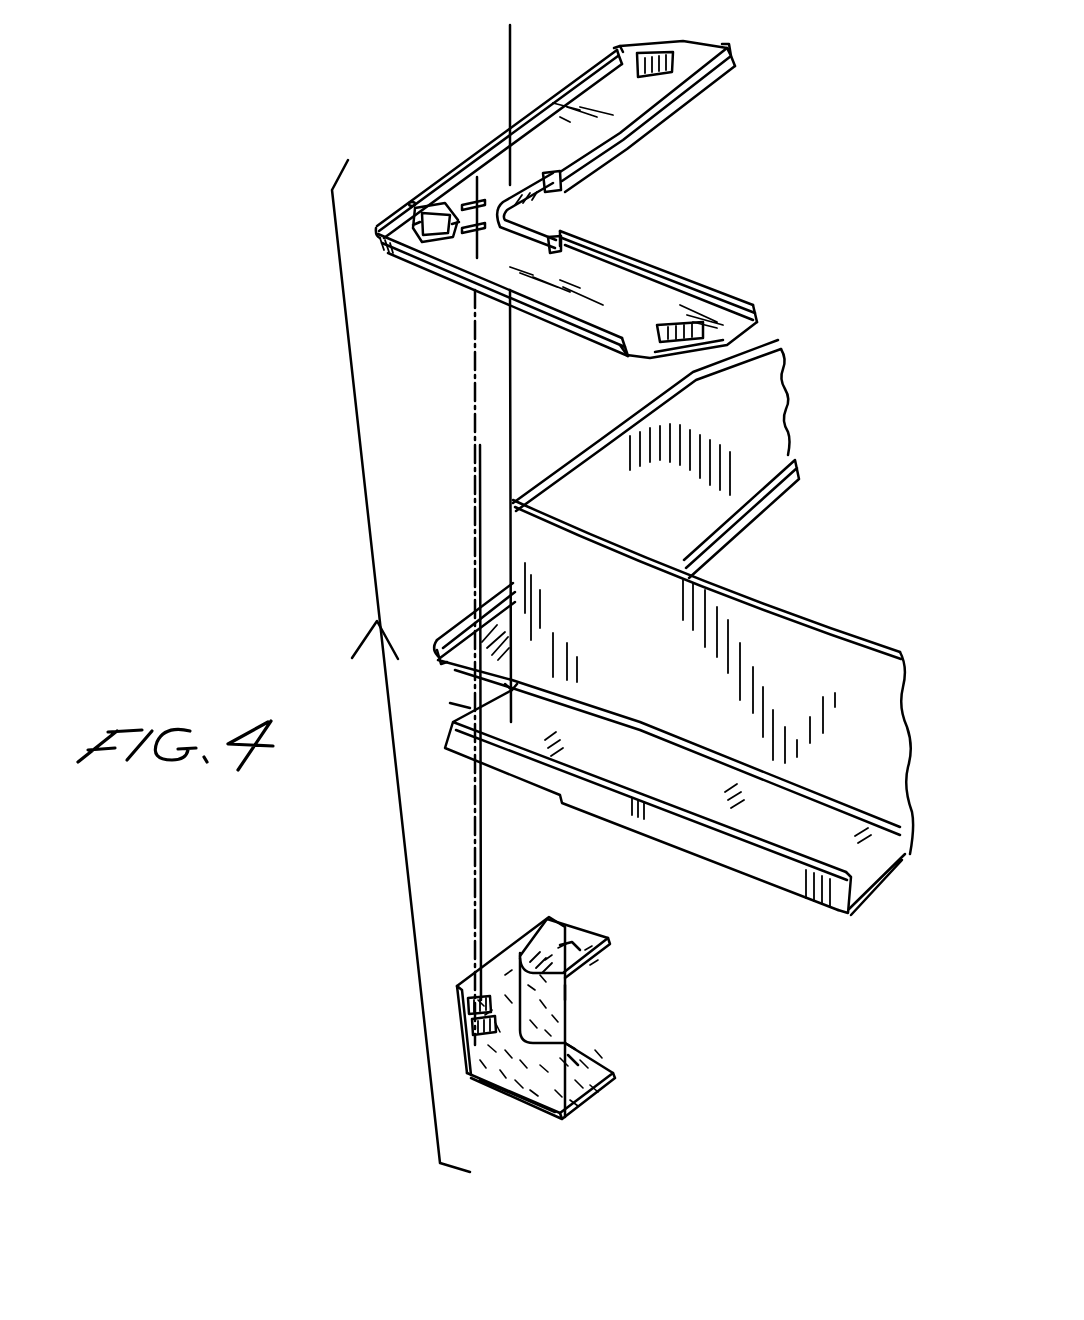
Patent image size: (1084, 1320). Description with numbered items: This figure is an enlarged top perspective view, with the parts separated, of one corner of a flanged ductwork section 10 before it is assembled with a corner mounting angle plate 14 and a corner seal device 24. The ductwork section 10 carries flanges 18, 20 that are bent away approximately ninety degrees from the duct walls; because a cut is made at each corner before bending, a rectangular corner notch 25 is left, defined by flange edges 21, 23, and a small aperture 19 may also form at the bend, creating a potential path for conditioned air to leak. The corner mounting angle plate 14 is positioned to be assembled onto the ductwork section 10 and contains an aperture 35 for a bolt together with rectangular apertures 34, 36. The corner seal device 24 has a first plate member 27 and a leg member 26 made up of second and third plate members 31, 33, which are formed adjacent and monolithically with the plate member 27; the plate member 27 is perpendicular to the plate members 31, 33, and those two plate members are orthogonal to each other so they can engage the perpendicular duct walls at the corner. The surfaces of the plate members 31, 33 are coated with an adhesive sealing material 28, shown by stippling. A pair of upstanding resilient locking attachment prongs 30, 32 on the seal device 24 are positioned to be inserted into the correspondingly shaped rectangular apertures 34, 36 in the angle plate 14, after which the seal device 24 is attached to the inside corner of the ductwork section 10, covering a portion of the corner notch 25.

The ductwork section 10 is at (793, 653).
The corner mounting angle plate 14 is at (631, 143).
The ductwork flange 18 is at (543, 778).
The small aperture 19 is at (510, 690).
The ductwork flange 20 is at (460, 606).
The flange edge 21 is at (435, 664).
The flange edge 23 is at (447, 702).
The corner seal device 24 is at (572, 1027).
The corner notch 25 is at (437, 705).
The leg member 26 is at (557, 948).
The first plate member 27 is at (520, 1094).
The adhesive sealing material 28 is at (563, 992).
The locking attachment prong 30 is at (470, 998).
The second plate member 31 is at (534, 934).
The locking attachment prong 32 is at (478, 1034).
The third plate member 33 is at (573, 1040).
The rectangular aperture 34 is at (466, 206).
The aperture in corner angle plate 35 is at (411, 201).
The rectangular aperture 36 is at (468, 238).